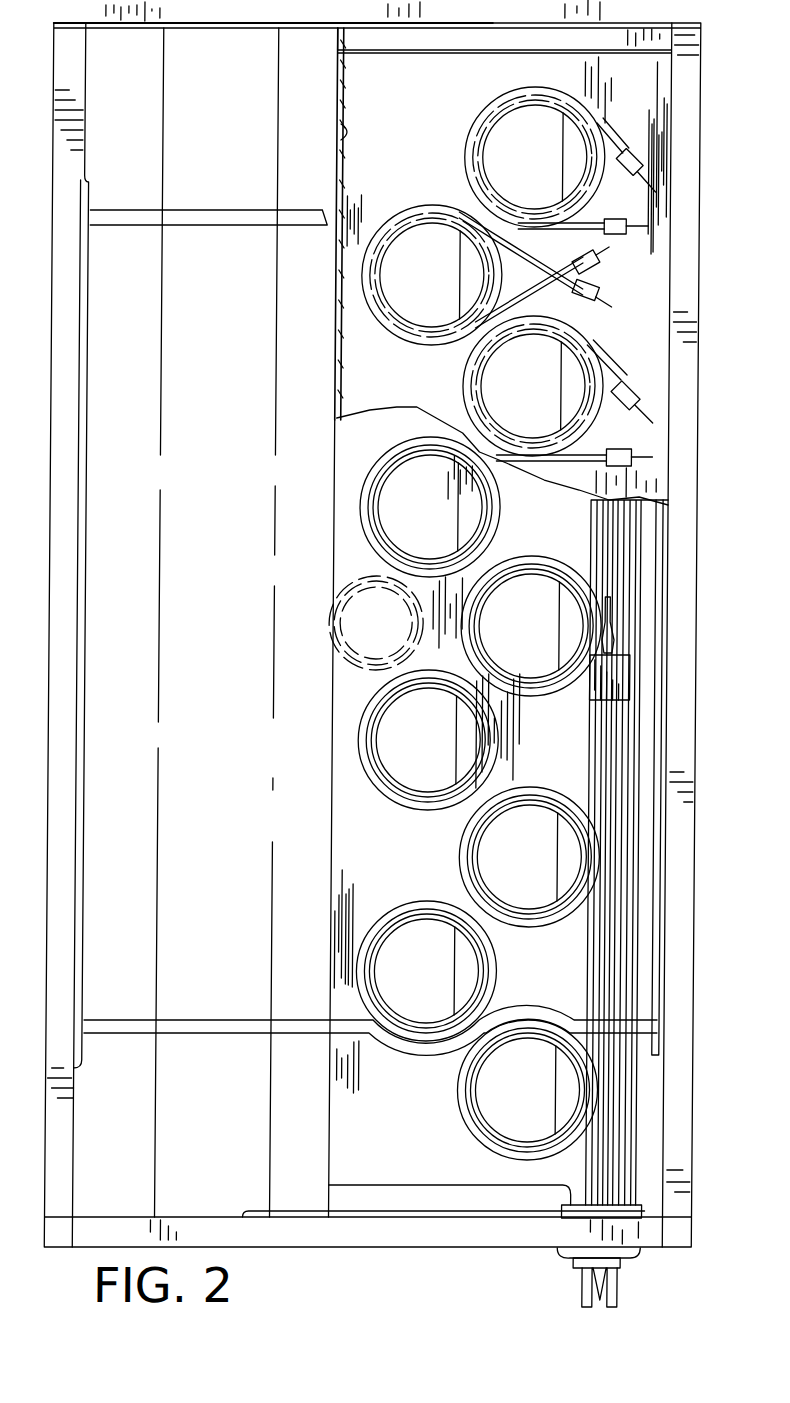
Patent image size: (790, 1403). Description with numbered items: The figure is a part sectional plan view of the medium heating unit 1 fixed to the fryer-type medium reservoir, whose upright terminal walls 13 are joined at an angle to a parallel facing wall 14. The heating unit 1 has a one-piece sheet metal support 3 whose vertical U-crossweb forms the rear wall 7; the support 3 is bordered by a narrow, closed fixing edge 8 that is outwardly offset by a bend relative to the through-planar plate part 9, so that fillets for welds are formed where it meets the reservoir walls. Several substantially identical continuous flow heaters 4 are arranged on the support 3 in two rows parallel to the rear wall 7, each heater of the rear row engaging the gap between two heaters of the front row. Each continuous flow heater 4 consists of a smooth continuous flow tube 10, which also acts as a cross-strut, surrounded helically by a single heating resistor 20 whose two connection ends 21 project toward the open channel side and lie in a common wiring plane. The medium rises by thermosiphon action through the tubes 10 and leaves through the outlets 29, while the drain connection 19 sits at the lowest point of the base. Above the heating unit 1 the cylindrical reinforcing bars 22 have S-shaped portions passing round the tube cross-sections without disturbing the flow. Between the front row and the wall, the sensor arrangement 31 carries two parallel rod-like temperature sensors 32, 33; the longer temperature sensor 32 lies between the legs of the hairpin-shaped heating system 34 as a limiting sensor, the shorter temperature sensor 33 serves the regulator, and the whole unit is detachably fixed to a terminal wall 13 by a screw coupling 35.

The medium heating unit 1 is at (660, 118).
The support 3 is at (318, 874).
The continuous flow heater 4 is at (401, 174).
The rear wall 7 is at (338, 325).
The fixing edge 8 is at (332, 38).
The plate part 9 is at (338, 129).
The continuous flow tube 10 is at (475, 393).
The terminal wall 13 is at (208, 28).
The facing wall 14 is at (92, 672).
The drain connection 19 is at (326, 600).
The heating resistor 20 is at (566, 100).
The connection end 21 is at (637, 178).
The reinforcing bar 22 is at (208, 213).
The outlet 29 is at (398, 485).
The sensor arrangement 31 is at (570, 953).
The temperature sensor 32 is at (609, 523).
The temperature sensor 33 is at (608, 748).
The heating system 34 is at (622, 850).
The screw coupling 35 is at (583, 1290).